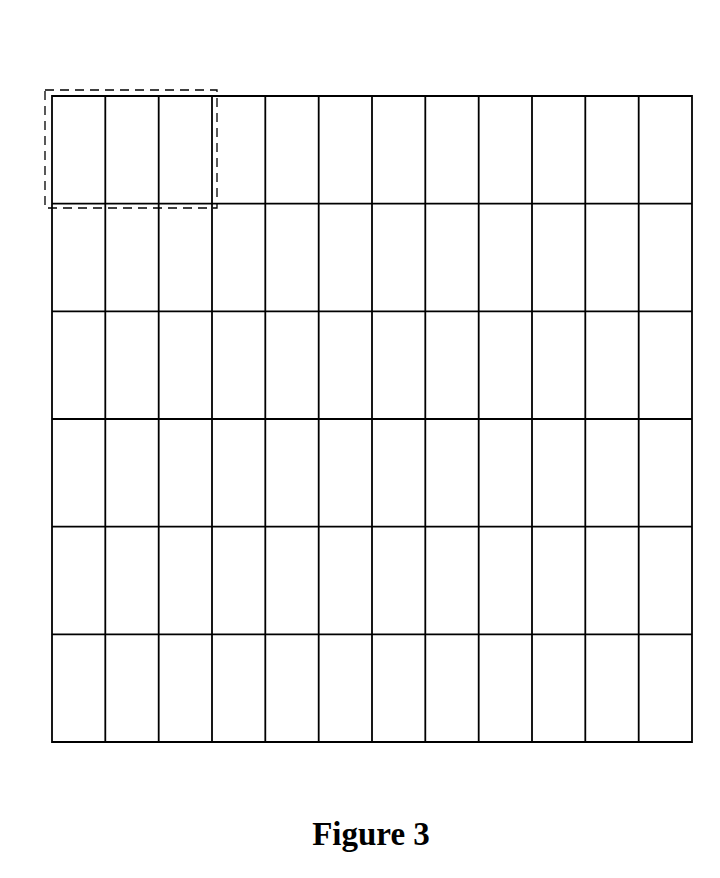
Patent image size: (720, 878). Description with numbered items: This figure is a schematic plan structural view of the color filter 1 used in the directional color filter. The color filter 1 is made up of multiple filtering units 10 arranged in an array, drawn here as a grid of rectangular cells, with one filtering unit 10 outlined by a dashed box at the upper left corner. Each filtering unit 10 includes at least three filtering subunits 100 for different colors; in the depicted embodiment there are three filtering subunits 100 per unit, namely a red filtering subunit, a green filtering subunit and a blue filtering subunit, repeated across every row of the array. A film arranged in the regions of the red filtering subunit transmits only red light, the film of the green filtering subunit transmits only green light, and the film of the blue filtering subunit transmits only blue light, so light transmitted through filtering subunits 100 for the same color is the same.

The color filter 1 is at (287, 96).
The filtering unit 10 is at (183, 90).
The filtering subunit 100 is at (70, 107).